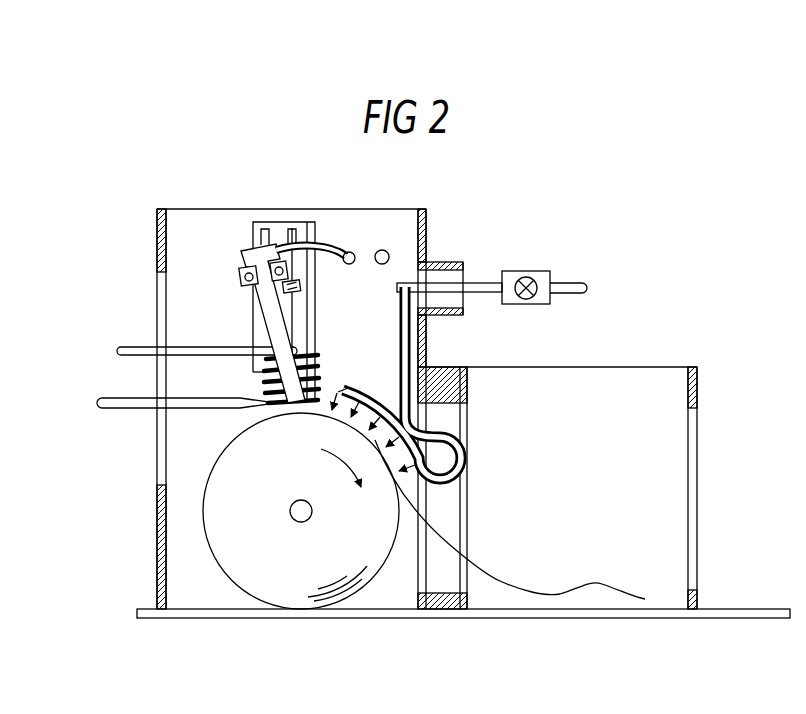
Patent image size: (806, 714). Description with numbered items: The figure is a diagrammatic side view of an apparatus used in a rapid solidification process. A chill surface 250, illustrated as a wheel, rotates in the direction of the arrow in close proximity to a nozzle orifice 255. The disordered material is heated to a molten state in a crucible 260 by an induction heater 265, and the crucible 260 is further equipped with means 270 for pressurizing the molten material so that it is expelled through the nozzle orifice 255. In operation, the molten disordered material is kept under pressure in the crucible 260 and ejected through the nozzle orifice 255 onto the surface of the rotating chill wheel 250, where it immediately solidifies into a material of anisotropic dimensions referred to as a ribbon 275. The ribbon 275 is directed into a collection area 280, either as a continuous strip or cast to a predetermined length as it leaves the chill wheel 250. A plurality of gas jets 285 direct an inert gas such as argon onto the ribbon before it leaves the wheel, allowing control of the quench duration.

The chill surface 250 is at (205, 502).
The nozzle orifice 255 is at (283, 411).
The crucible 260 is at (276, 332).
The induction heater 265 is at (127, 349).
The means for pressurizing 270 is at (315, 248).
The ribbon 275 is at (502, 583).
The collection area 280 is at (655, 498).
The gas jets 285 is at (348, 394).